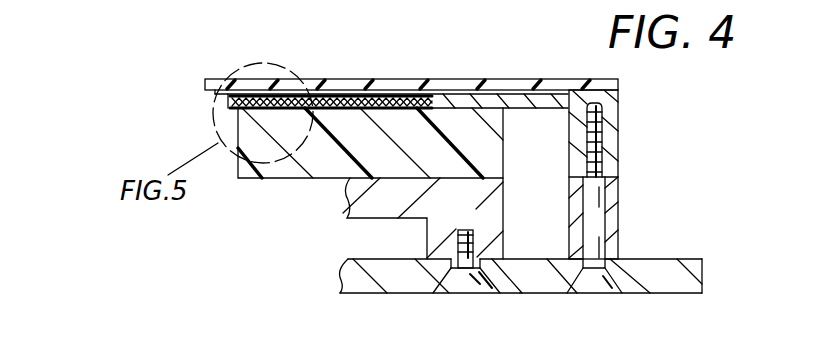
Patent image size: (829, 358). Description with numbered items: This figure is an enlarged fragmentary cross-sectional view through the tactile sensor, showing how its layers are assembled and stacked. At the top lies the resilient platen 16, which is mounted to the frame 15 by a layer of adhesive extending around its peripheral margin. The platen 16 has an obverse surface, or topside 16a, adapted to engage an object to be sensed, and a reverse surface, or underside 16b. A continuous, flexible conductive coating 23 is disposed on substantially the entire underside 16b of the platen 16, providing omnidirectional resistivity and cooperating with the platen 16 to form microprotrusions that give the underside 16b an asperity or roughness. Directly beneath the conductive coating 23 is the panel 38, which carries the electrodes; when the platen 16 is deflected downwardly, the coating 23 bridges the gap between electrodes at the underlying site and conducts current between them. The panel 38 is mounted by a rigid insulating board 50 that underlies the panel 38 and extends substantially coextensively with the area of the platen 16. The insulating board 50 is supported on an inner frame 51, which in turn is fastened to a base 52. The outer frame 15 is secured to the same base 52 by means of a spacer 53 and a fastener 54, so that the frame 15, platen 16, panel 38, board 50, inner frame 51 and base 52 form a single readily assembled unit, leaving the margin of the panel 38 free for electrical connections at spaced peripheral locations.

The frame 15 is at (610, 133).
The resilient platen 16 is at (360, 82).
The topside 16a is at (418, 80).
The underside 16b is at (465, 89).
The conductive coating 23 is at (337, 93).
The panel 38 is at (235, 110).
The rigid insulating board 50 is at (323, 170).
The inner frame 51 is at (365, 212).
The base 52 is at (412, 287).
The spacer 53 is at (612, 210).
The fastener 54 is at (603, 285).